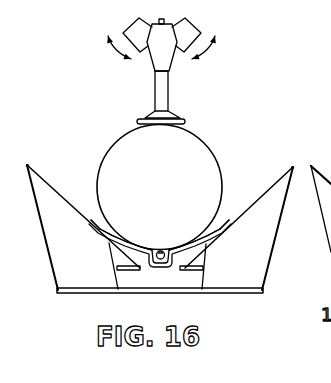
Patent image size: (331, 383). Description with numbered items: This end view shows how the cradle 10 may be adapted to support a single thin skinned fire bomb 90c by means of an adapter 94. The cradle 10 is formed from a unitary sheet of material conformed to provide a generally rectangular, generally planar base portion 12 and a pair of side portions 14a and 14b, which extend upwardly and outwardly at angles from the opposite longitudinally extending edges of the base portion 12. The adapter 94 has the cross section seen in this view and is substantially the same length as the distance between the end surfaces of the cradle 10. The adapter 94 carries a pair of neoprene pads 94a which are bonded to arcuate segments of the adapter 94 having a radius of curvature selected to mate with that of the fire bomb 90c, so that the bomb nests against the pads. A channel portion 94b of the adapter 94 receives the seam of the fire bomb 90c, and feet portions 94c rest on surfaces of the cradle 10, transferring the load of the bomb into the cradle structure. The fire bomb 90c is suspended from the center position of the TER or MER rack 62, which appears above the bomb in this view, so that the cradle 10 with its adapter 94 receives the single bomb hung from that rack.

The cradle 10 is at (234, 309).
The base portion 12 is at (137, 294).
The side portion 14a is at (63, 280).
The side portion 14b is at (256, 266).
The TER or MER rack 62 is at (165, 35).
The fire bomb 90c is at (176, 187).
The adapter 94 is at (201, 255).
The neoprene pads 94a is at (127, 241).
The channel portion 94b is at (118, 270).
The feet portions 94c is at (91, 220).